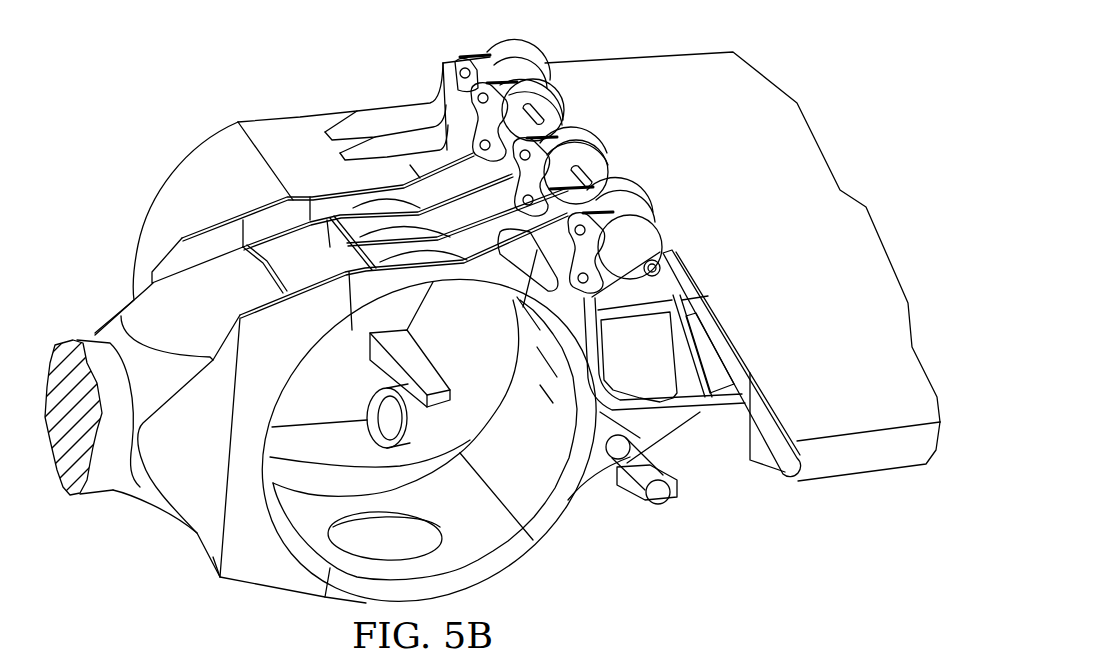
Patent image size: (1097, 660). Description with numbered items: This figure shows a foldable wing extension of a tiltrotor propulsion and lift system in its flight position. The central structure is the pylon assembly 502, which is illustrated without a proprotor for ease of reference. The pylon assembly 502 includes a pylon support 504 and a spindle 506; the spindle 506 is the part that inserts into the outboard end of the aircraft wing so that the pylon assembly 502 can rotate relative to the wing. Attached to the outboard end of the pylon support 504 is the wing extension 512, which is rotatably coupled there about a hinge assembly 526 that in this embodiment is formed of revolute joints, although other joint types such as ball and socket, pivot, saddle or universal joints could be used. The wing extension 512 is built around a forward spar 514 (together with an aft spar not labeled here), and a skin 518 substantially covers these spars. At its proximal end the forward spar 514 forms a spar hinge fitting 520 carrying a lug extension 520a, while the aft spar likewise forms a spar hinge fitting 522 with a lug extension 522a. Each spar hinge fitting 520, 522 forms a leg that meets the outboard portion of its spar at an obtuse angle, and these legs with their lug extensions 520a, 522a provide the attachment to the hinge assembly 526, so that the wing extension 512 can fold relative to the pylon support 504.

The pylon assembly 502 is at (252, 114).
The pylon support 504 is at (497, 560).
The spindle 506 is at (213, 557).
The wing extension 512 is at (715, 62).
The forward spar 514 is at (715, 350).
The skin 518 is at (890, 403).
The spar hinge fitting 520 is at (673, 263).
The lug extension 520a is at (667, 243).
The spar hinge fitting 522 is at (540, 72).
The lug extension 522a is at (502, 65).
The hinge assembly 526 is at (597, 128).